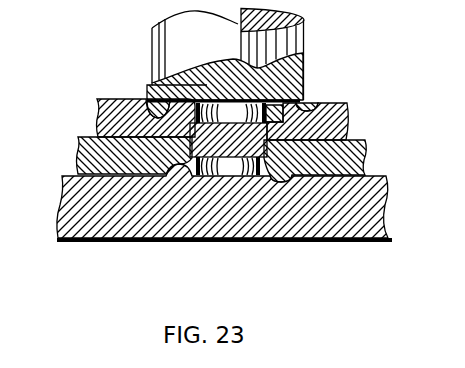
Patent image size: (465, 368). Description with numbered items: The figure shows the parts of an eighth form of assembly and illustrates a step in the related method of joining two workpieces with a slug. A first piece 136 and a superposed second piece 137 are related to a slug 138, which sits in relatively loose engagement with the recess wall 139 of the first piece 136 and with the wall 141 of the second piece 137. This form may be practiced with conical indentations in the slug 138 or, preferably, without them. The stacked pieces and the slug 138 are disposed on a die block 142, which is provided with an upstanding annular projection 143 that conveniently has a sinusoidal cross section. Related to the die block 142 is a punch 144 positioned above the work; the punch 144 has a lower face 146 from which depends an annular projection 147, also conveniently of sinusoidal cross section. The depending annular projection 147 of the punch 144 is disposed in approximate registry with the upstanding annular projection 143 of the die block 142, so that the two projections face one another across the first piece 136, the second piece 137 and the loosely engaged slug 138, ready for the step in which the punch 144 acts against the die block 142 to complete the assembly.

The first piece 136 is at (78, 153).
The second piece 137 is at (99, 116).
The slug 138 is at (185, 242).
The recess wall 139 is at (236, 138).
The wall 141 is at (245, 100).
The die block 142 is at (88, 225).
The annular projection 143 is at (283, 172).
The punch 144 is at (150, 34).
The lower face 146 is at (310, 103).
The annular projection 147 is at (148, 90).